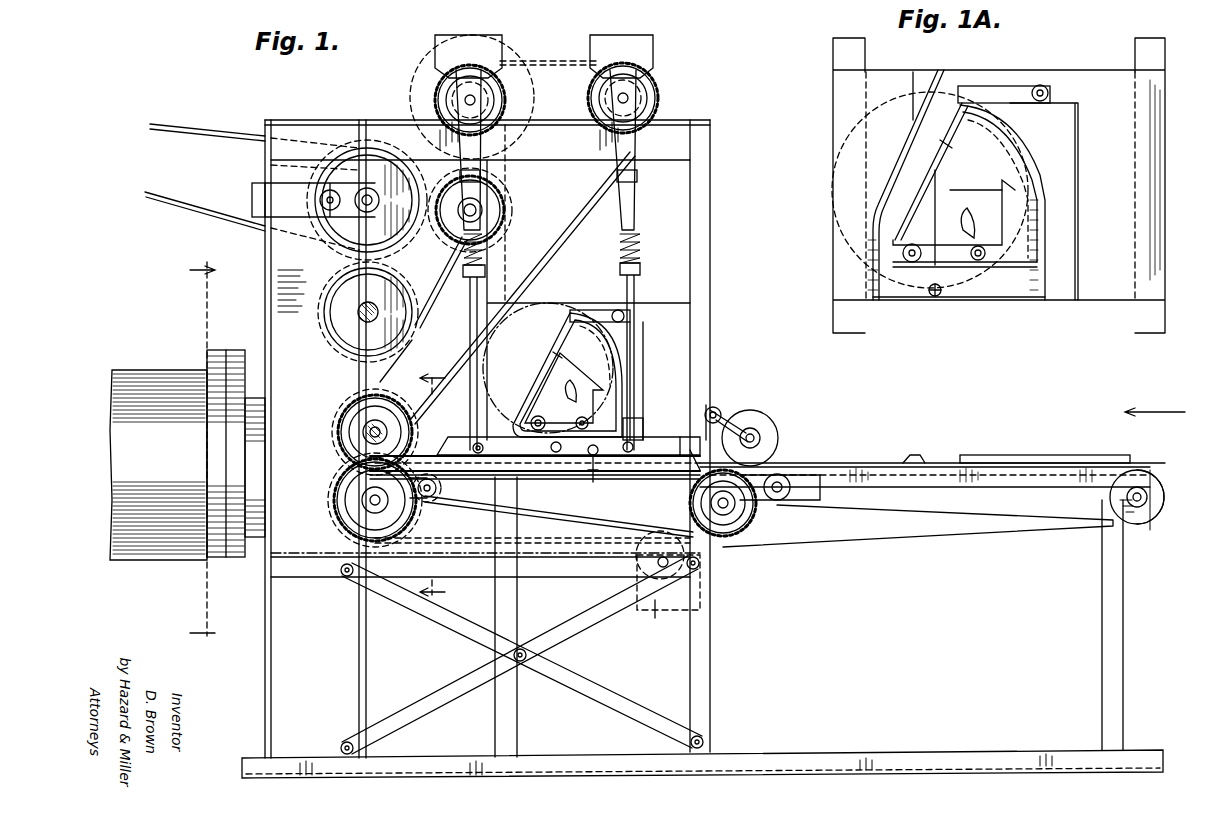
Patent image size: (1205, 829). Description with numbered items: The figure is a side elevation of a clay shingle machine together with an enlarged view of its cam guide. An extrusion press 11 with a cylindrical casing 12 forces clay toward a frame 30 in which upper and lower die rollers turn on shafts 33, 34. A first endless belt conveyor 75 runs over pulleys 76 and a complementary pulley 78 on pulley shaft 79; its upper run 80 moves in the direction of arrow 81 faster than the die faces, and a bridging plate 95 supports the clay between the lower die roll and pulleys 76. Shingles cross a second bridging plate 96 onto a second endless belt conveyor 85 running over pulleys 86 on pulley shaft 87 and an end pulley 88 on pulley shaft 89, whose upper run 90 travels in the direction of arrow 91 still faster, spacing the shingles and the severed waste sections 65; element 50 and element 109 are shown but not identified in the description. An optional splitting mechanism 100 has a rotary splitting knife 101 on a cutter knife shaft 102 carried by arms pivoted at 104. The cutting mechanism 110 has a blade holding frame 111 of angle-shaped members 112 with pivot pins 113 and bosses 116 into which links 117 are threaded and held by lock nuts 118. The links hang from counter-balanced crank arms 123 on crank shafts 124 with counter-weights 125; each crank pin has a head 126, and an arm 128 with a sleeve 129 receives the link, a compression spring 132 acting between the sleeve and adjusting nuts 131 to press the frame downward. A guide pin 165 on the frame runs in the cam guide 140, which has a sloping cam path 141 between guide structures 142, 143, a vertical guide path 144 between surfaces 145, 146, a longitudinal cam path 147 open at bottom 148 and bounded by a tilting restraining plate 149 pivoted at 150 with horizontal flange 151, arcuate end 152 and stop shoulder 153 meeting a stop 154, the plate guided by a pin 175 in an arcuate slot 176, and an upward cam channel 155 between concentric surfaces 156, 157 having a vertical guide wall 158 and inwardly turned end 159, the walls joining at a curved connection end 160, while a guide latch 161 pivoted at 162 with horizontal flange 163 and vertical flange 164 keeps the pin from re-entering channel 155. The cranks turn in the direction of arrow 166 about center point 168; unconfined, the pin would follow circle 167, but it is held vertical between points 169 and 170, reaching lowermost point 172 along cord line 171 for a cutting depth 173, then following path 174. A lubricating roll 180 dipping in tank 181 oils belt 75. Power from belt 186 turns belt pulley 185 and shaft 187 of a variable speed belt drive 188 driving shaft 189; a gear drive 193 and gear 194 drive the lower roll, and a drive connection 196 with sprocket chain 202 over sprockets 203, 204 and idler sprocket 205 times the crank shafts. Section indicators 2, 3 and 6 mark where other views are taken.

In FIG. 1, the extrusion press 11 is at (130, 362).
In FIG. 1, the outer cylindrical casing 12 is at (180, 368).
In FIG. 1, the frame 30 is at (305, 660).
In FIG. 1, the shaft 33 is at (365, 425).
In FIG. 1, the shaft 34 is at (365, 505).
In FIG. 1, the conveyor 50 is at (1040, 458).
In FIG. 1, the waste section 65 is at (912, 455).
In FIG. 1, the first endless belt conveyor 75 is at (600, 518).
In FIG. 1, the pulleys 76 is at (430, 497).
In FIG. 1, the complementary pulley 78 is at (738, 525).
In FIG. 1, the pulley shaft 79 is at (723, 515).
In FIG. 1, the upper run 80 is at (630, 486).
In FIG. 1, the arrow 81 is at (622, 485).
In FIG. 1, the second endless belt conveyor 85 is at (975, 515).
In FIG. 1, the first set of pulleys 86 is at (780, 500).
In FIG. 1, the pulley shaft 87 is at (790, 478).
In FIG. 1, the end pulley 88 is at (1160, 475).
In FIG. 1, the pulley shaft 89 is at (1148, 492).
In FIG. 1, the upper run 90 is at (975, 458).
In FIG. 1, the arrow 91 is at (1044, 478).
In FIG. 1, the bridging plate 95 is at (440, 458).
In FIG. 1, the second bridging plate 96 is at (770, 465).
In FIG. 1, the splitting mechanism 100 is at (780, 428).
In FIG. 1, the rotary splitting knife 101 is at (762, 420).
In FIG. 1, the cutter knife shaft 102 is at (752, 428).
In FIG. 1, the pivot 104 is at (716, 405).
In FIG. 1, the arm 109 is at (728, 418).
In FIG. 1, the cutting mechanism 110 is at (648, 225).
In FIG. 1, the blade holding frame 111 is at (650, 440).
In FIG. 1, the angle-shaped members 112 is at (692, 446).
In FIG. 1, the pivot pins 113 is at (472, 446).
In FIG. 1, the boss 116 is at (645, 425).
In FIG. 1, the link 117 is at (470, 332).
In FIG. 1, the lock nuts 118 is at (643, 410).
In FIG. 1, the counter-balanced crank arm 123 is at (655, 120).
In FIG. 1, the crank shaft 124 is at (640, 90).
In FIG. 1, the counter-weight 125 is at (630, 48).
In FIG. 1, the head 126 is at (638, 170).
In FIG. 1, the arm 128 is at (640, 188).
In FIG. 1, the sleeve 129 is at (638, 206).
In FIG. 1, the adjusting nuts 131 is at (636, 256).
In FIG. 1, the compression spring 132 is at (638, 240).
In FIG. 1A, the cam guide 140 is at (850, 170).
In FIG. 1, the downwardly sloping cam path 141 is at (530, 372).
In FIG. 1A, the downwardly sloping cam path 141 is at (905, 150).
In FIG. 1A, the guide structure 142 is at (893, 175).
In FIG. 1A, the guide structure 143 is at (905, 205).
In FIG. 1A, the vertical guide path 144 is at (880, 258).
In FIG. 1A, the vertical surface 145 is at (878, 245).
In FIG. 1A, the vertical surface 146 is at (892, 250).
In FIG. 1A, the longitudinal cam path 147 is at (975, 290).
In FIG. 1A, the bottom 148 is at (1030, 302).
In FIG. 1, the tilting restraining plate 149 is at (552, 420).
In FIG. 1A, the tilting restraining plate 149 is at (960, 245).
In FIG. 1A, the pivot 150 is at (920, 250).
In FIG. 1A, the normal horizontal flange 151 is at (1010, 268).
In FIG. 1A, the arcuate end 152 is at (1030, 225).
In FIG. 1A, the stop shoulder 153 is at (976, 193).
In FIG. 1, the stop 154 is at (565, 358).
In FIG. 1A, the stop 154 is at (952, 148).
In FIG. 1, the cam channel 155 is at (640, 353).
In FIG. 1A, the cam channel 155 is at (1030, 160).
In FIG. 1A, the concentric guide surface 156 is at (1035, 135).
In FIG. 1A, the concentric guide surface 157 is at (1010, 152).
In FIG. 1A, the vertical guide wall 158 is at (1032, 250).
In FIG. 1A, the inwardly turned end 159 is at (1025, 195).
In FIG. 1A, the curved connection end 160 is at (935, 110).
In FIG. 1A, the guide latch 161 is at (1010, 92).
In FIG. 1A, the pivot 162 is at (1047, 88).
In FIG. 1A, the normal horizontal flange 163 is at (985, 95).
In FIG. 1A, the vertical flange 164 is at (952, 90).
In FIG. 1, the guide pin 165 is at (590, 472).
In FIG. 1A, the guide pin 165 is at (933, 298).
In FIG. 1, the arrow 166 is at (535, 118).
In FIG. 1, the circular path 167 is at (572, 318).
In FIG. 1A, the circular path 167 is at (835, 208).
In FIG. 1A, the center point 168 is at (938, 195).
In FIG. 1, the point 169 is at (448, 155).
In FIG. 1A, the point 169 is at (885, 302).
In FIG. 1, the point 170 is at (490, 163).
In FIG. 1A, the point 170 is at (985, 275).
In FIG. 1A, the cord line 171 is at (920, 280).
In FIG. 1, the lowermost point 172 is at (490, 180).
In FIG. 1A, the lowermost point 172 is at (937, 300).
In FIG. 1A, the measurement 173 is at (940, 290).
In FIG. 1A, the path 174 is at (1022, 258).
In FIG. 1, the pin 175 is at (582, 423).
In FIG. 1A, the pin 175 is at (985, 253).
In FIG. 1, the arcuate slot 176 is at (578, 398).
In FIG. 1A, the arcuate slot 176 is at (975, 230).
In FIG. 1, the friction driven lubricating roll 180 is at (650, 552).
In FIG. 1, the lubricating tank 181 is at (666, 598).
In FIG. 1, the belt pulley 185 is at (362, 140).
In FIG. 1, the belt 186 is at (225, 130).
In FIG. 1, the shaft 187 is at (367, 200).
In FIG. 1, the variable speed belt drive 188 is at (410, 285).
In FIG. 1, the shaft 189 is at (368, 312).
In FIG. 1, the gear drive 193 is at (405, 420).
In FIG. 1, the gear 194 is at (430, 505).
In FIG. 1, the drive connection 196 is at (547, 258).
In FIG. 1, the sprocket chain 202 is at (568, 240).
In FIG. 1, the sprocket 203 is at (645, 103).
In FIG. 1, the sprocket 204 is at (490, 85).
In FIG. 1, the idler sprocket 205 is at (460, 228).
In FIG. 1, the section line 2 is at (194, 441).
In FIG. 1, the section line 3 is at (1155, 406).
In FIG. 1, the section line 6 is at (432, 486).